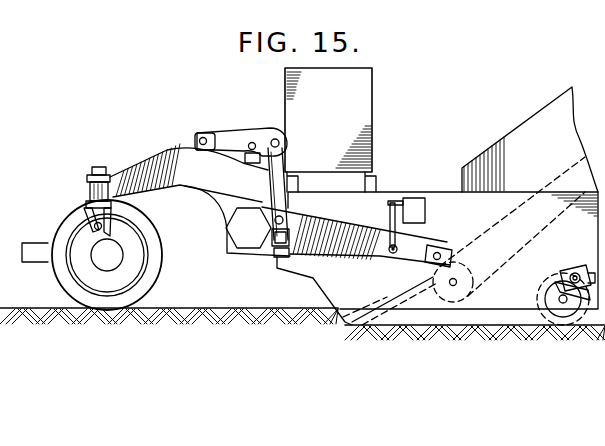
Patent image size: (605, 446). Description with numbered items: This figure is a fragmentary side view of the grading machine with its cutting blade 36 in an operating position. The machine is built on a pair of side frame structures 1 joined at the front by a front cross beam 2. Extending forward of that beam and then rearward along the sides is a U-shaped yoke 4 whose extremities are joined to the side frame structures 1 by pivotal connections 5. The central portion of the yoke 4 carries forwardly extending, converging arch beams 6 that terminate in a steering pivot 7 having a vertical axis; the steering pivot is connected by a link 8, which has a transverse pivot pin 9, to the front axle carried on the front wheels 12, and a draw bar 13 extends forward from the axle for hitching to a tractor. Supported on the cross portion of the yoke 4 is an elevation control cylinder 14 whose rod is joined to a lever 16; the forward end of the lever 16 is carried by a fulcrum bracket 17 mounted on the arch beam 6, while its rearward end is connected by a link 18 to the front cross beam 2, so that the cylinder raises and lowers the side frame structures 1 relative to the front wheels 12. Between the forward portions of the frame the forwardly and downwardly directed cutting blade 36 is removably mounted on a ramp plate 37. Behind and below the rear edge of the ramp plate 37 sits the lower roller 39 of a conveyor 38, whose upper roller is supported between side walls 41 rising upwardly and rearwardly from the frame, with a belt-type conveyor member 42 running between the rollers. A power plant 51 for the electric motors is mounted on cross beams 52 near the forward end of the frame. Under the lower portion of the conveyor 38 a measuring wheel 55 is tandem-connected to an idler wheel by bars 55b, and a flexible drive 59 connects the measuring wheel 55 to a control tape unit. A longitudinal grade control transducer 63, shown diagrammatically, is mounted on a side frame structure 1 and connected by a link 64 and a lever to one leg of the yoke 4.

The side frame structure 1 is at (447, 201).
The front cross beam 2 is at (277, 258).
The U-shaped yoke 4 is at (310, 247).
The pivotal connection 5 is at (440, 253).
The arch beam 6 is at (167, 152).
The steering pivot 7 is at (99, 166).
The link 8 is at (110, 230).
The transverse pivot pin 9 is at (86, 206).
The wheel 12 is at (147, 225).
The draw bar 13 is at (32, 243).
The elevation control cylinder 14 is at (272, 136).
The lever 16 is at (229, 134).
The fulcrum bracket 17 is at (199, 134).
The link 18 is at (285, 167).
The cutting blade 36 is at (345, 318).
The ramp plate 37 is at (390, 300).
The conveyor 38 is at (558, 176).
The lower roller 39 is at (458, 264).
The side wall 41 is at (522, 127).
The conveyor member 42 is at (533, 238).
The power plant 51 is at (328, 120).
The cross beam 52 is at (331, 181).
The measuring wheel 55 is at (545, 313).
The bar 55b is at (558, 281).
The flexible drive 59 is at (586, 266).
The longitudinal grade control transducer 63 is at (409, 197).
The link 64 is at (388, 203).